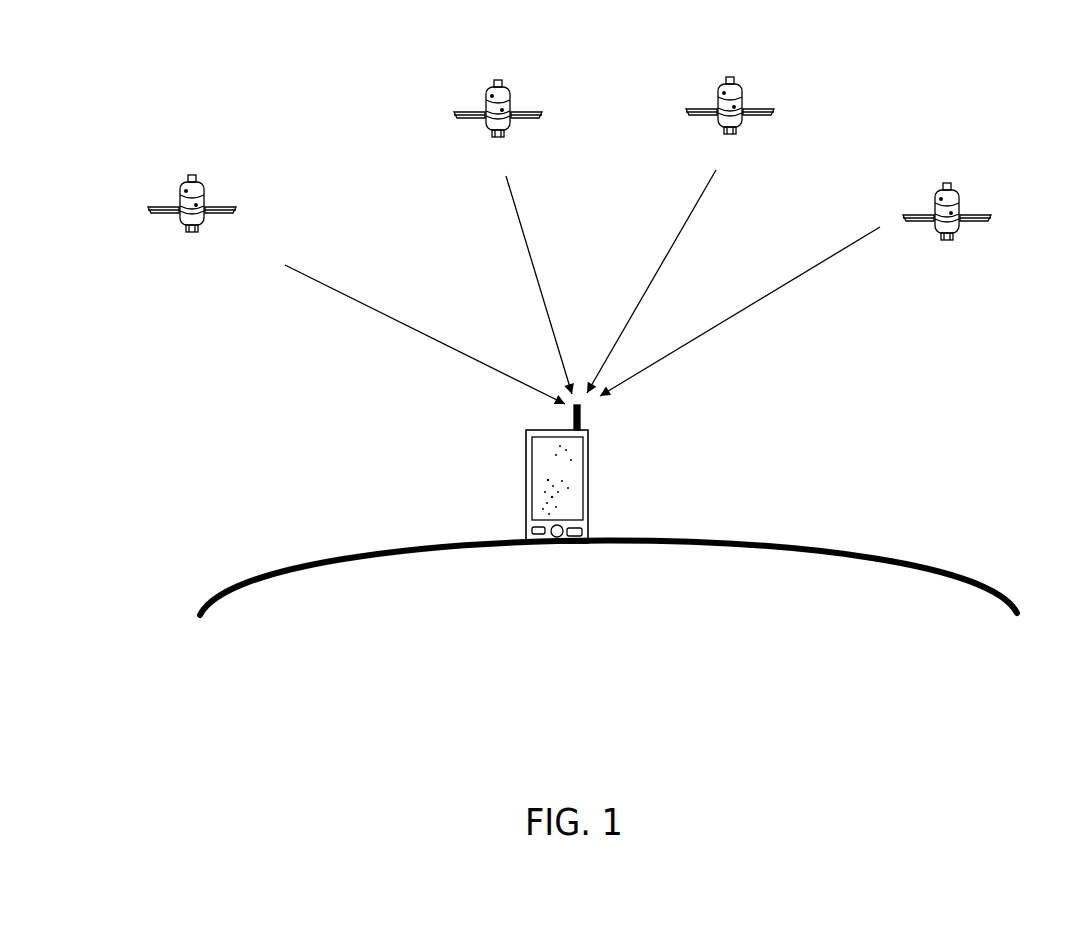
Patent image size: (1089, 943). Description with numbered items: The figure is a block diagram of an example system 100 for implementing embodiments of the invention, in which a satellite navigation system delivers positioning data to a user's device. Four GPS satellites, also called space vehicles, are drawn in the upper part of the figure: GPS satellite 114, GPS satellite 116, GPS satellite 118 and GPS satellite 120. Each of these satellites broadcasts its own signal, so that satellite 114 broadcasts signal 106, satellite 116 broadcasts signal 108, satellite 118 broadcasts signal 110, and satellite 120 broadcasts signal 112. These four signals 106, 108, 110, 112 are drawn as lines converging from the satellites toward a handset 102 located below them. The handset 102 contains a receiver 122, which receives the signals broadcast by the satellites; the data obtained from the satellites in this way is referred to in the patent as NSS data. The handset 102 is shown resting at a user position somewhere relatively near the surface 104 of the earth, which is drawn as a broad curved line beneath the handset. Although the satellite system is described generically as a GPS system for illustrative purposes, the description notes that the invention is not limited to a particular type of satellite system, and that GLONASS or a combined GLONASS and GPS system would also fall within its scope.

The system 100 is at (863, 143).
The handset 102 is at (587, 498).
The surface of earth 104 is at (472, 551).
The signal 106 is at (405, 326).
The signal 108 is at (522, 240).
The signal 110 is at (670, 250).
The signal 112 is at (715, 323).
The GPS satellite 114 is at (191, 218).
The GPS satellite 116 is at (499, 124).
The GPS satellite 118 is at (731, 121).
The GPS satellite 120 is at (949, 227).
The receiver 122 is at (557, 475).